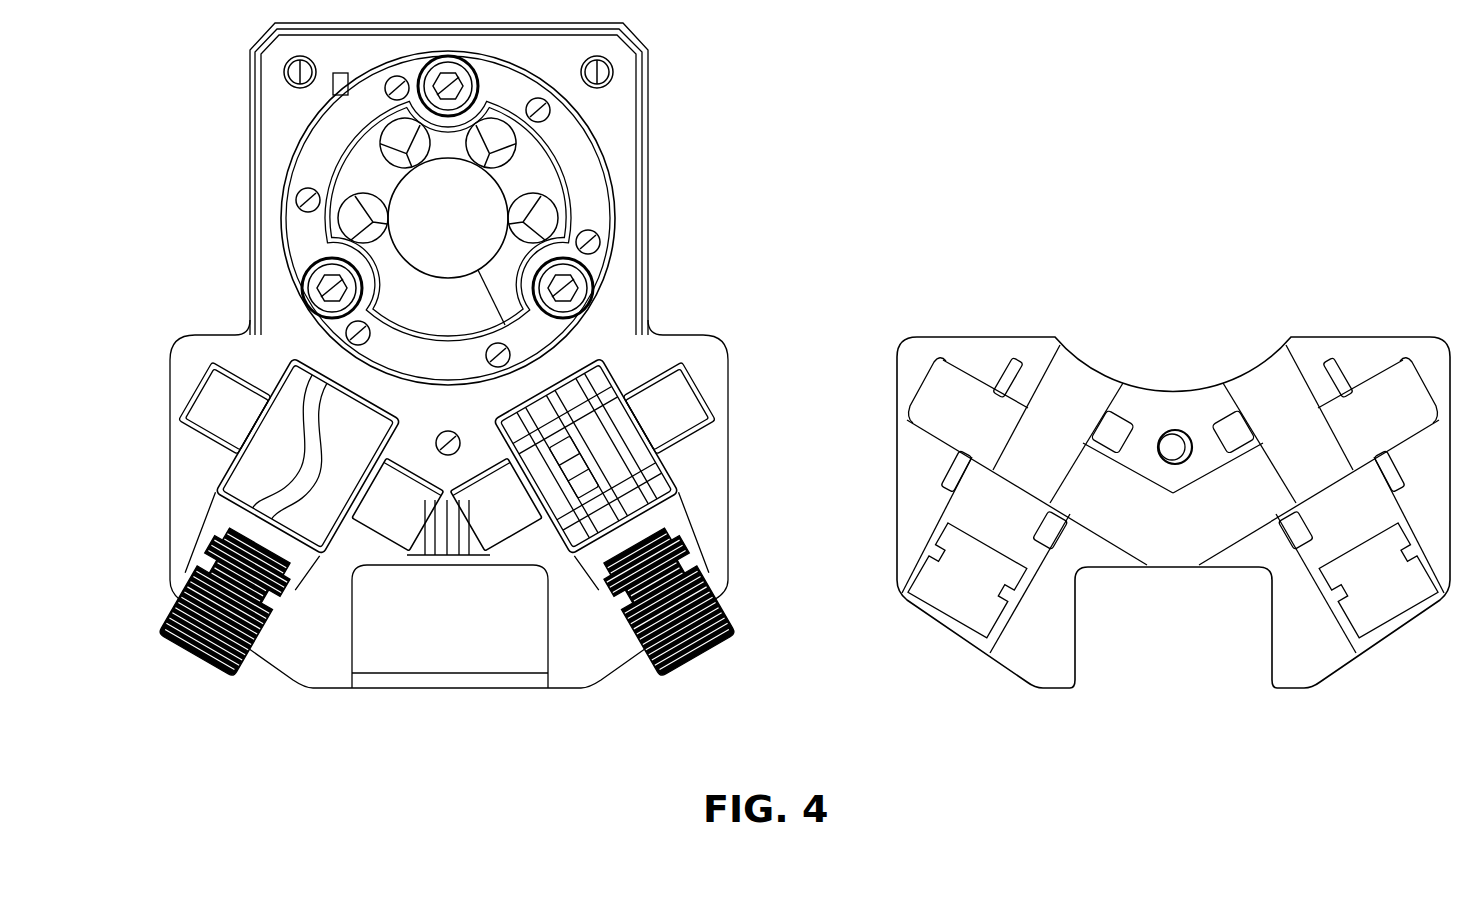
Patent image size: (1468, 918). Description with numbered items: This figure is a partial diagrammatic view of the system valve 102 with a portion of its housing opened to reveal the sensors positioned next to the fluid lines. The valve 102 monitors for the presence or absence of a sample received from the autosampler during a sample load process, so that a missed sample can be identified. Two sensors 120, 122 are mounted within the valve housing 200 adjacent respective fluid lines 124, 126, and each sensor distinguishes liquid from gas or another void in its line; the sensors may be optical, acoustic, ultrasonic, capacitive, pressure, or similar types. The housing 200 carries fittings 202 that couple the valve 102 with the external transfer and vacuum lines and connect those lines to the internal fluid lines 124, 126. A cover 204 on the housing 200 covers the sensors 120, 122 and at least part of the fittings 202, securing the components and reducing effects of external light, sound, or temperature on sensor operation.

The valve 102 is at (818, 76).
The sensor 120 is at (387, 513).
The sensor 122 is at (508, 513).
The fluid line 124 is at (283, 503).
The fluid line 126 is at (683, 517).
The valve housing 200 is at (183, 450).
The fittings 202 is at (160, 624).
The cover 204 is at (980, 352).